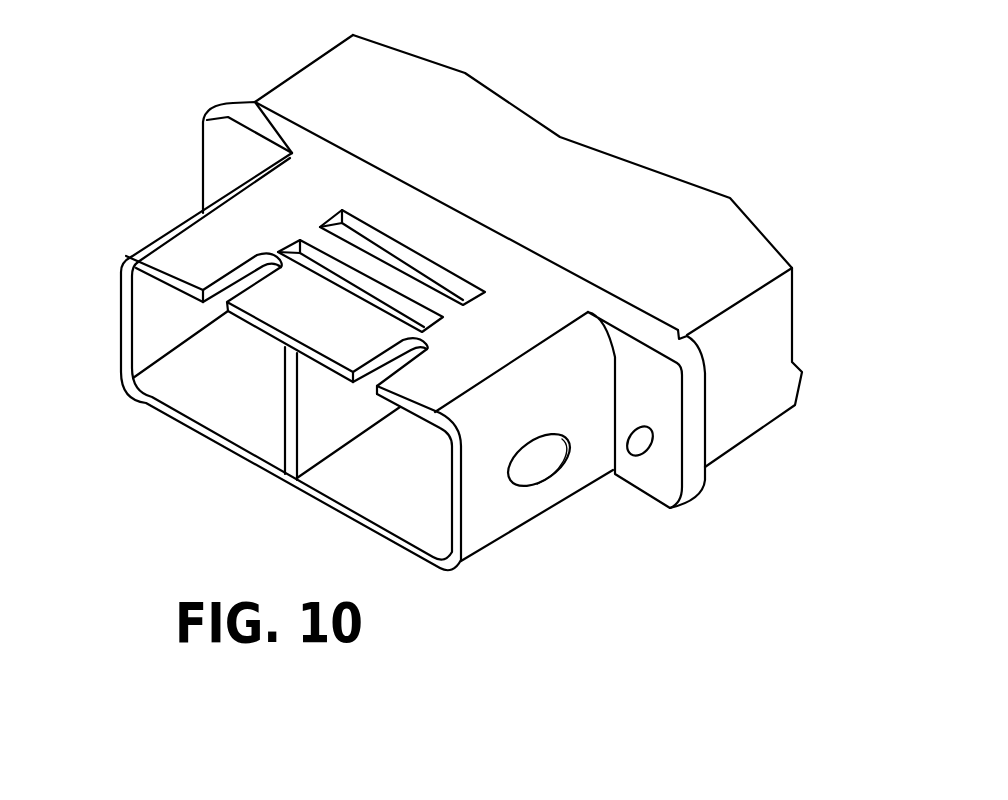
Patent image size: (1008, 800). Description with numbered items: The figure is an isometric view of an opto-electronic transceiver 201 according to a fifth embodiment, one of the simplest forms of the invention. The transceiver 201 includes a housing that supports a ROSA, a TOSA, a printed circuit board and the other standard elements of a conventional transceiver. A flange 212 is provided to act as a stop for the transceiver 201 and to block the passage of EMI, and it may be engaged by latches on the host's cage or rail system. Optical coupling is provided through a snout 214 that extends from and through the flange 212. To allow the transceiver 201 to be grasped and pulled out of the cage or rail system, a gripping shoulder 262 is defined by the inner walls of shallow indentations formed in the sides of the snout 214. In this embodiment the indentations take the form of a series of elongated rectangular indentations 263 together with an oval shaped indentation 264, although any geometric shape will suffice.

The transceiver 201 is at (610, 175).
The flange 212 is at (218, 133).
The snout 214 is at (262, 220).
The gripping shoulder 262 is at (282, 303).
The elongated rectangular indentations 263 is at (405, 258).
The oval shaped indentation 264 is at (537, 460).